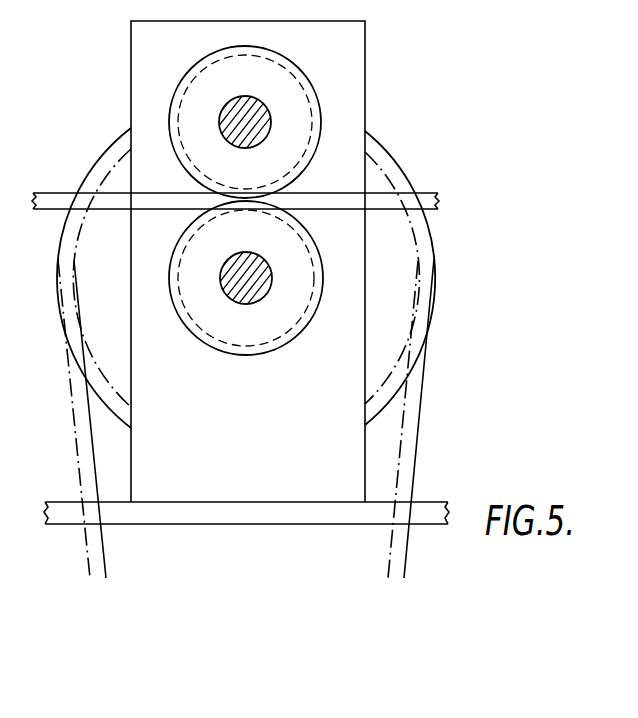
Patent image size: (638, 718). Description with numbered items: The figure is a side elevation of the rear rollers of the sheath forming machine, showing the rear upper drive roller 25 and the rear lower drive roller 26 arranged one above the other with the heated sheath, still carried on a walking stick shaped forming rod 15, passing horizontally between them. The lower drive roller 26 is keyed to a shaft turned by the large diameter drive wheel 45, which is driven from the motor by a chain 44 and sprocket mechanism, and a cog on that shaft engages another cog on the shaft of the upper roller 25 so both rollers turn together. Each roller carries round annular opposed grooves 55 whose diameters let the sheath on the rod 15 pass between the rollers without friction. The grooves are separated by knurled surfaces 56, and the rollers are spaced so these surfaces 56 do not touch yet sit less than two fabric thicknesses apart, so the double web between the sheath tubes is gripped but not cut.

The forming rod 15 is at (437, 211).
The rear upper drive roller 25 is at (281, 88).
The rear lower drive roller 26 is at (300, 252).
The chain 44 is at (411, 450).
The large diameter drive wheel 45 is at (433, 296).
The annular opposed groove 55 is at (316, 127).
The knurled surface 56 is at (320, 149).